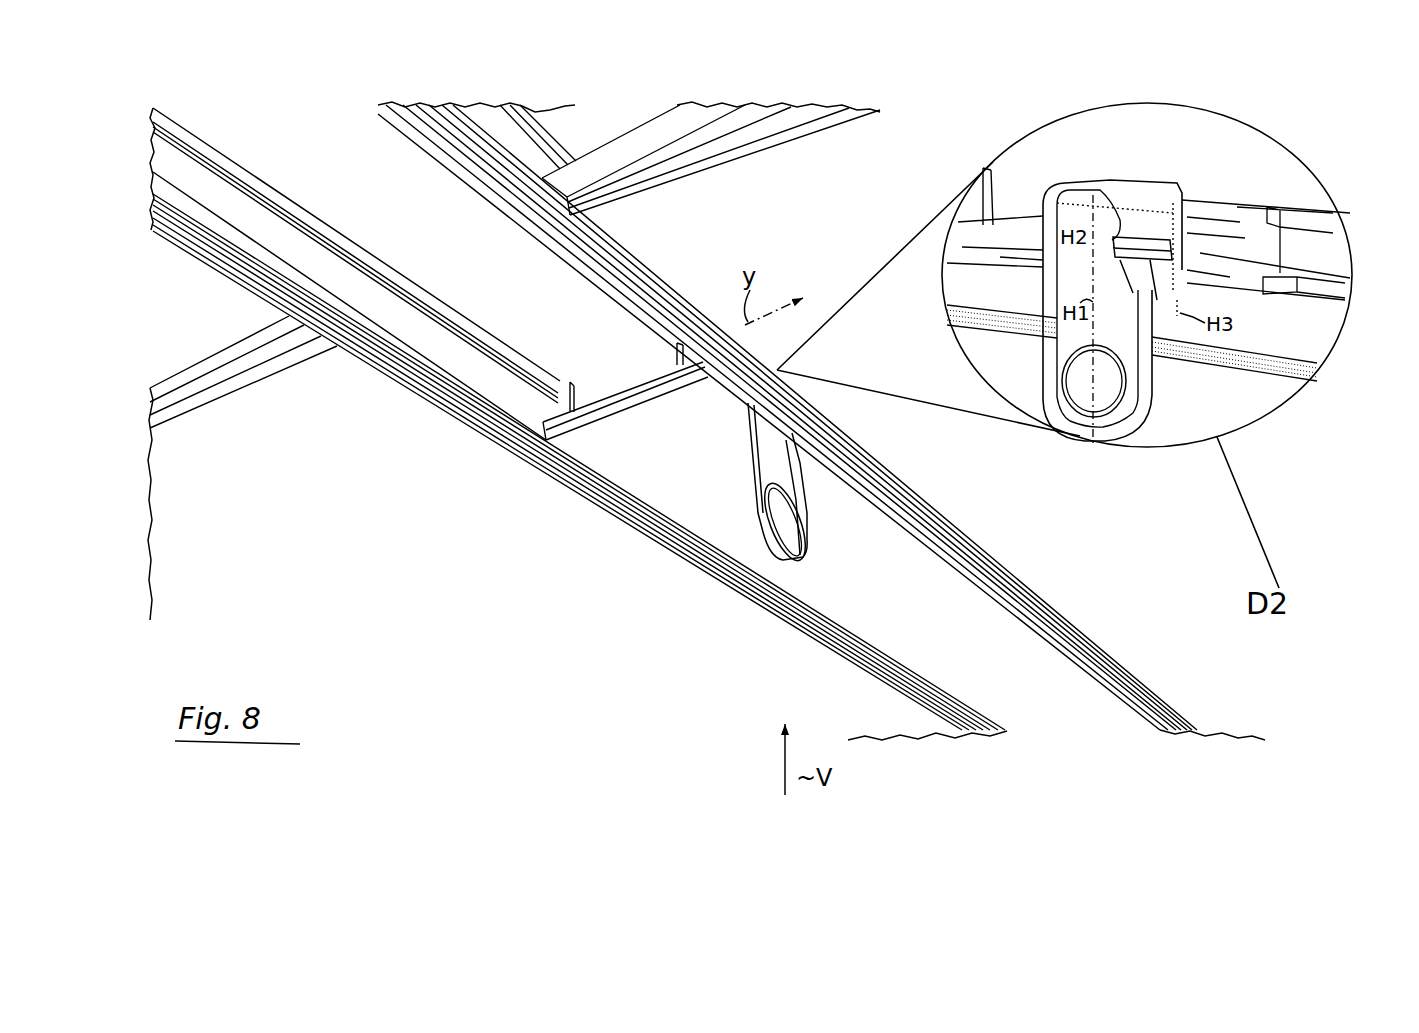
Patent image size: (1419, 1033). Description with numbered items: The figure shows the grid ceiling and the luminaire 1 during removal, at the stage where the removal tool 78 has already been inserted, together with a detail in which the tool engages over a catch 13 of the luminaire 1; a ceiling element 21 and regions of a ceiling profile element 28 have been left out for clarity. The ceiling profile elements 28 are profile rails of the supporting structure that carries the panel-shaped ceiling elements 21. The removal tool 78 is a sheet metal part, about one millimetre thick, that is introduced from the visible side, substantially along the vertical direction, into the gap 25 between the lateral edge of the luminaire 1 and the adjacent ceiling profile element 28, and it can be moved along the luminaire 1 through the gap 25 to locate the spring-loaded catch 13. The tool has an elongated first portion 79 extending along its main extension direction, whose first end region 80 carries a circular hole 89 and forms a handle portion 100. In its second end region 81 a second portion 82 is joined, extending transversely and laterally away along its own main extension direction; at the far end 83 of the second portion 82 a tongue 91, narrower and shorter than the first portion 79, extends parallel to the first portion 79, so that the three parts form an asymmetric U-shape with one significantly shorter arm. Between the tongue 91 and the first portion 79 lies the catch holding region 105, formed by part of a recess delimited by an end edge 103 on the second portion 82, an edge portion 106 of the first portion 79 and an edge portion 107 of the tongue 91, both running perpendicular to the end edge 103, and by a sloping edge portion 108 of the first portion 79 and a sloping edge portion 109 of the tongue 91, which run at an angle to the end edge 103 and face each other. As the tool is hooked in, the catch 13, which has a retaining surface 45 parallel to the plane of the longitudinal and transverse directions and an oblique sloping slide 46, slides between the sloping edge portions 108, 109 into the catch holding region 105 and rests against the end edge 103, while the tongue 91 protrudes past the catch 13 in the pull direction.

The luminaire 1 is at (629, 453).
The catch 13 is at (1148, 236).
The ceiling element 21 is at (374, 522).
The gap 25 is at (822, 477).
The ceiling profile element 28 is at (193, 168).
The retaining surface 45 is at (1173, 290).
The sloping slide 46 is at (1188, 208).
The removal tool 78 is at (753, 477).
The first portion 79 is at (1030, 298).
The first end region 80 is at (1144, 424).
The second end region 81 is at (1100, 180).
The second portion 82 is at (1140, 176).
The far end 83 is at (1172, 246).
The circular hole 89 is at (772, 535).
The tongue 91 is at (1190, 228).
The handle portion 100 is at (755, 525).
The end edge 103 is at (1150, 240).
The catch holding region 105 is at (1108, 252).
The edge portion 106 is at (1057, 175).
The edge portion 107 is at (1182, 252).
The sloping edge portion 108 is at (1185, 330).
The sloping edge portion 109 is at (1217, 313).